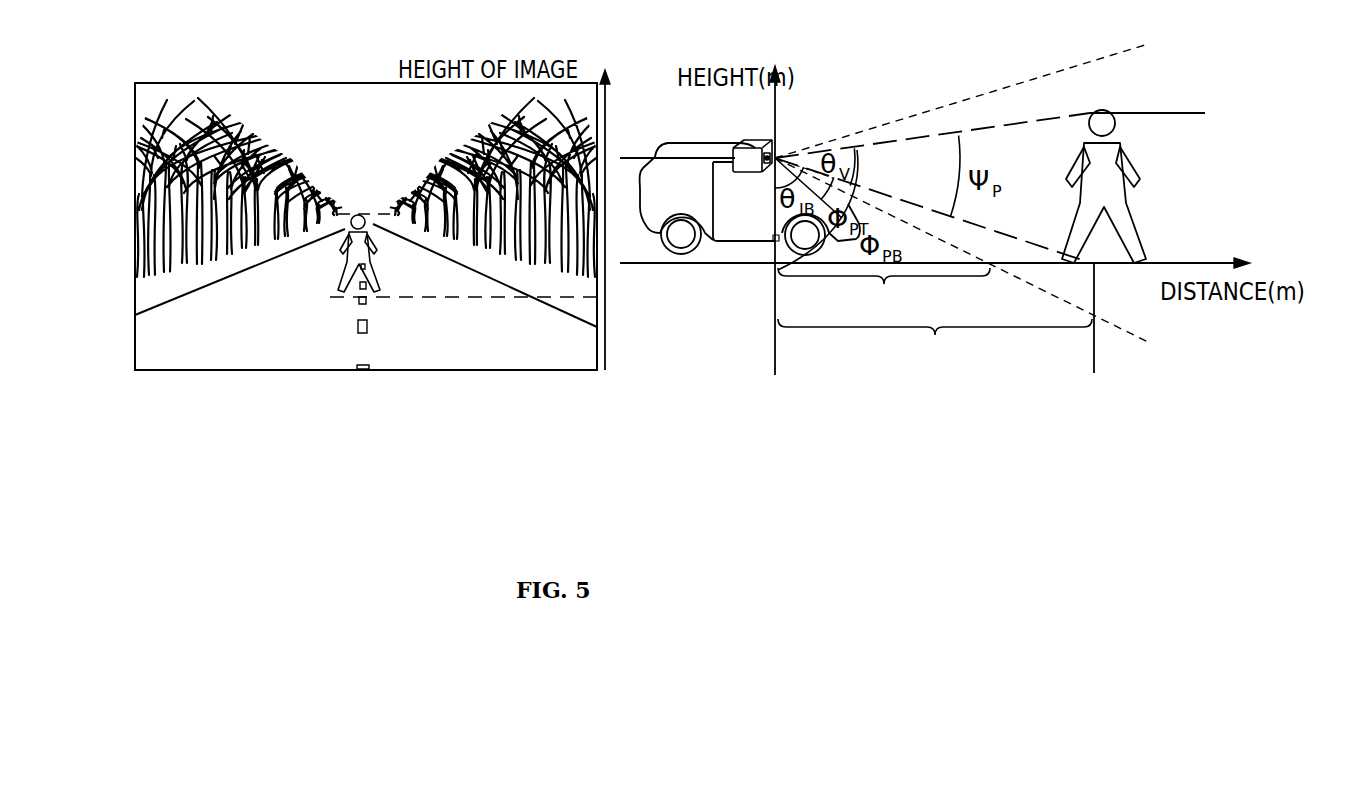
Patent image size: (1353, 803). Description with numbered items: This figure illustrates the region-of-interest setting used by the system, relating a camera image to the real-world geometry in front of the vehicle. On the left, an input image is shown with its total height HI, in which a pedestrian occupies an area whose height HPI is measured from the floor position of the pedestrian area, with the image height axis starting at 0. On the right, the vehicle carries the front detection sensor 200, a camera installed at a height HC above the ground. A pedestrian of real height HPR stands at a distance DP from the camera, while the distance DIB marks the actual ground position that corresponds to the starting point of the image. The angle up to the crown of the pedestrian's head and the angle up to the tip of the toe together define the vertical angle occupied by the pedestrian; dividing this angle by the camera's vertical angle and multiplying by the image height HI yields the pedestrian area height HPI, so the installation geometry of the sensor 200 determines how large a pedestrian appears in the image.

The front detection sensor 200 is at (757, 146).
The image height axis origin 0 is at (613, 225).
The size (height) of the input image HI is at (129, 85).
The size (height) of the pedestrian area in the image HPI is at (403, 224).
The height at which the camera is installed HC is at (750, 199).
The size (height) of the pedestrian HPR is at (1148, 113).
The distance up to an actual position corresponding to the starting point of the ima DIB is at (884, 293).
The distance up to the pedestrian DP is at (936, 320).